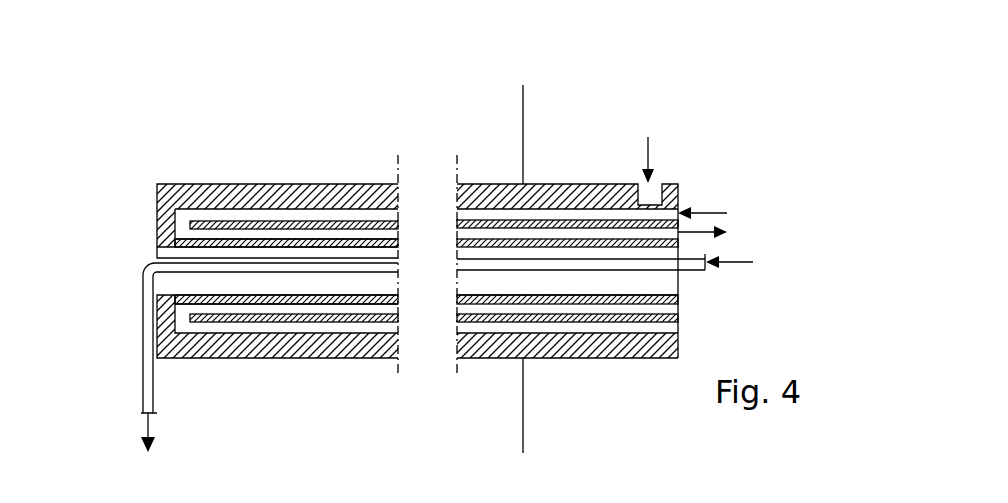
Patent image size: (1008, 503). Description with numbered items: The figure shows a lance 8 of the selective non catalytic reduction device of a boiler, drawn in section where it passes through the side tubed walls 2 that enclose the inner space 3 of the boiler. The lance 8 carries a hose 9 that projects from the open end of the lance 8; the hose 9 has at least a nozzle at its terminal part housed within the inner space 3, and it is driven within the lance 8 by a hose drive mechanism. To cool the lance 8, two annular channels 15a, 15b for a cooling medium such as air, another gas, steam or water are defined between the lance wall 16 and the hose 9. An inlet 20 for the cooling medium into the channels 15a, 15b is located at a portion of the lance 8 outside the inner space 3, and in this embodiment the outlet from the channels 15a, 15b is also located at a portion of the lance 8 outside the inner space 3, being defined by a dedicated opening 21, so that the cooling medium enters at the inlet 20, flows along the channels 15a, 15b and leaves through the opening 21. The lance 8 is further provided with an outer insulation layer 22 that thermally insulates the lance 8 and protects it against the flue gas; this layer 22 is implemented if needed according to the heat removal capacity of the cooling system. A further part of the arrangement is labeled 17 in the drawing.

The side tubed wall 2 is at (523, 117).
The inner space 3 is at (441, 95).
The lance 8 is at (160, 185).
The hose 9 is at (143, 288).
The annular channel 15a is at (305, 307).
The annular channel 15b is at (375, 325).
The lance wall 16 is at (203, 323).
The inner tube wall 17 is at (240, 273).
The inlet 20 is at (655, 197).
The dedicated opening 21 is at (677, 235).
The outer insulation layer 22 is at (205, 185).